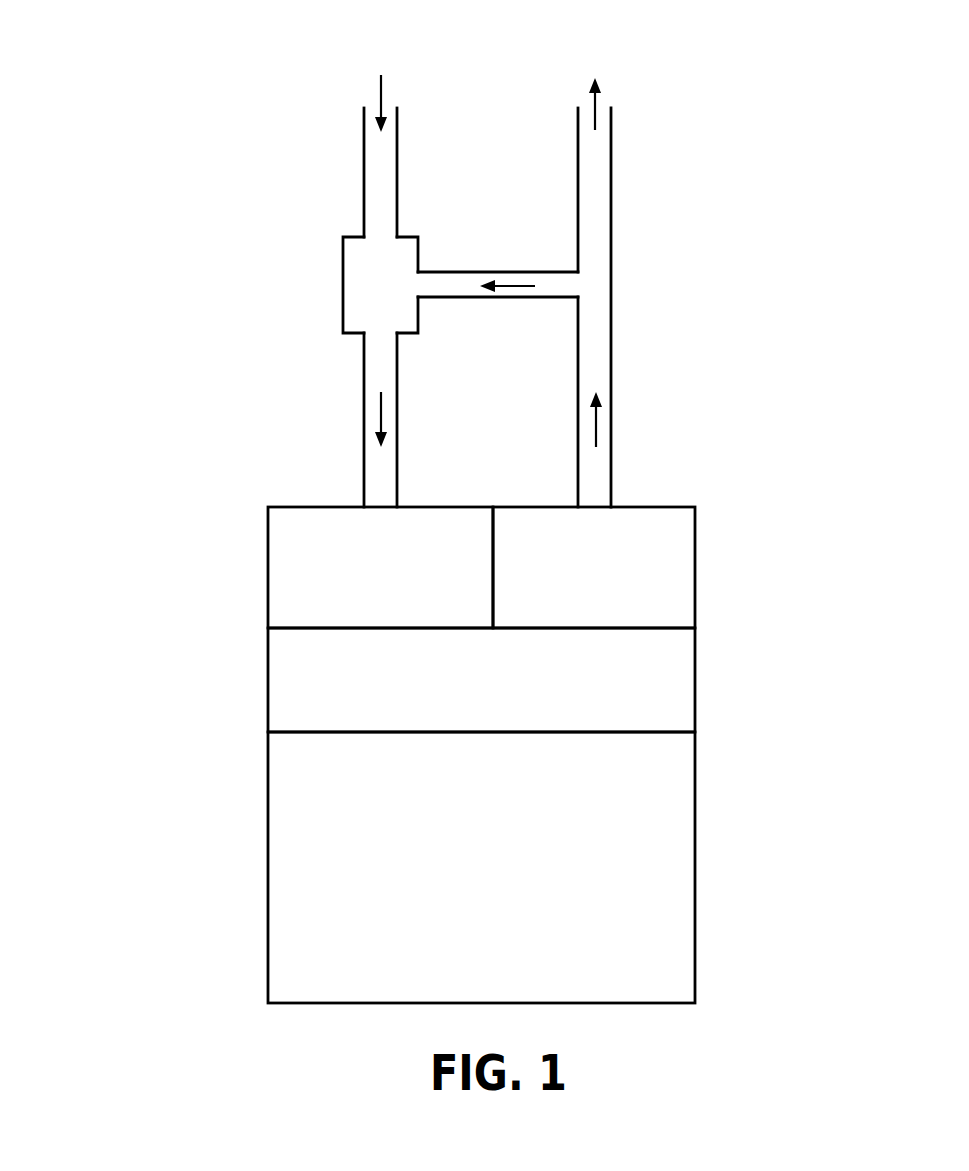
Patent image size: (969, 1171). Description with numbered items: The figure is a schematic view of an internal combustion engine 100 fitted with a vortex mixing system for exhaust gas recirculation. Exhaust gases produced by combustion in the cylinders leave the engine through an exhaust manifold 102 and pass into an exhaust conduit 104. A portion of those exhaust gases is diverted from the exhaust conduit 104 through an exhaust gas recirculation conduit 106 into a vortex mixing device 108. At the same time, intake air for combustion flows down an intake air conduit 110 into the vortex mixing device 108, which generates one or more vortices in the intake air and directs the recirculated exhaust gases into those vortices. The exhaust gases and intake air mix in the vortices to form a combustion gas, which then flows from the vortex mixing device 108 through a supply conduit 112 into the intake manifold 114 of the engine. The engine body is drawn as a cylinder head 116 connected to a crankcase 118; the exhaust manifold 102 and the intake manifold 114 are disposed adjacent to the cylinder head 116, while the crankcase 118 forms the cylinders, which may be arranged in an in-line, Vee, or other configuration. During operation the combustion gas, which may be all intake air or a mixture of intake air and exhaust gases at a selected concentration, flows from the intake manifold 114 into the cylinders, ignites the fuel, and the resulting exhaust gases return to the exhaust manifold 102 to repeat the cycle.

The internal combustion engine 100 is at (86, 204).
The exhaust manifold 102 is at (625, 571).
The exhaust conduit 104 is at (611, 380).
The exhaust gas recirculation (EGR) conduit 106 is at (455, 272).
The vortex mixing device 108 is at (343, 285).
The intake air conduit 110 is at (363, 172).
The supply conduit 112 is at (362, 460).
The intake manifold 114 is at (312, 587).
The cylinder head 116 is at (648, 680).
The crankcase 118 is at (668, 842).